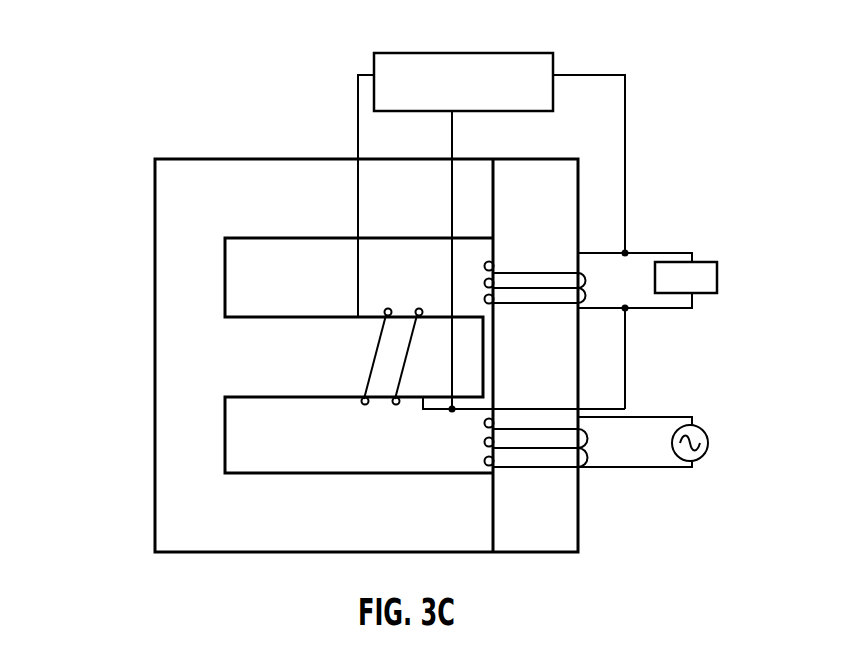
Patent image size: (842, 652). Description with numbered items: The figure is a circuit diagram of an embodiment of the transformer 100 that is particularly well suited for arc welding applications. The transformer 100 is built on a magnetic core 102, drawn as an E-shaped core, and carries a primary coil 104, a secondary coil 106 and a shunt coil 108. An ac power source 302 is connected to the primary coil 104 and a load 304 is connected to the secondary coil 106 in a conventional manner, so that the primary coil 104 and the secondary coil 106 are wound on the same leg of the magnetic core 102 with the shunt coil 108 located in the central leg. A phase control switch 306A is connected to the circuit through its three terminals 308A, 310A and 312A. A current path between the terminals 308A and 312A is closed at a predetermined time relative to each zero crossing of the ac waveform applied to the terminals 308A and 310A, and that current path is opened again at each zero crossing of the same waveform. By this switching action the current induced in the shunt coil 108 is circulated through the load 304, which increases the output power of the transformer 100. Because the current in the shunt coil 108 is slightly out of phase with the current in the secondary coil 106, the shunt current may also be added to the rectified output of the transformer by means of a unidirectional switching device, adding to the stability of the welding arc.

The transformer 100 is at (114, 126).
The magnetic core 102 is at (165, 207).
The primary coil 104 is at (520, 469).
The secondary coil 106 is at (500, 272).
The shunt coil 108 is at (389, 309).
The ac power source 302 is at (704, 433).
The load 304 is at (738, 281).
The phase control switch 306A is at (462, 53).
The terminal 308A is at (391, 187).
The terminal 310A is at (524, 247).
The terminal 312A is at (556, 233).